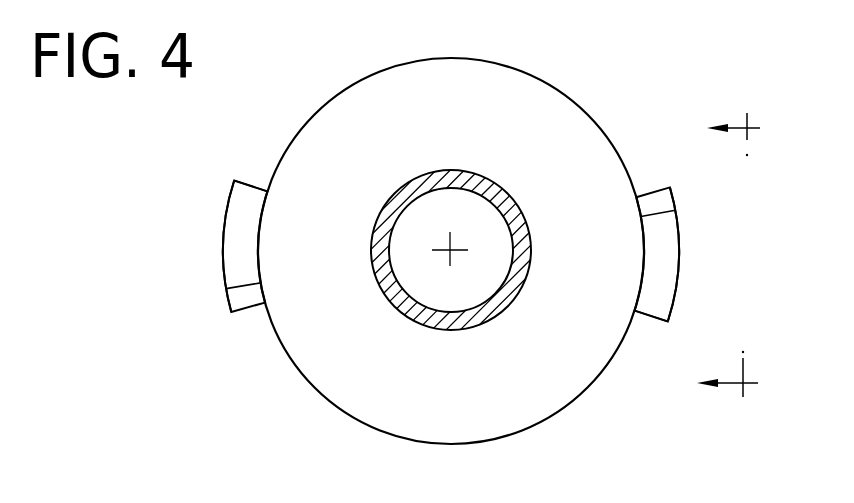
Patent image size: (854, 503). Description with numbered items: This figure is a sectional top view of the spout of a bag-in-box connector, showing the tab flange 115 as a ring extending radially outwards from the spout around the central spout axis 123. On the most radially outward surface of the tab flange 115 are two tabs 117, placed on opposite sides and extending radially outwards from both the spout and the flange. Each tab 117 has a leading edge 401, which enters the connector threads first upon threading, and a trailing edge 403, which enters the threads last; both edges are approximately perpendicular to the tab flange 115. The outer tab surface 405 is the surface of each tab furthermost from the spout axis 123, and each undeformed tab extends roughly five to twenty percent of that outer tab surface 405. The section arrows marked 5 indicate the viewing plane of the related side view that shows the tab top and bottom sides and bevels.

The tab flange 115 is at (540, 410).
The tabs 117 is at (223, 257).
The spout axis 123 is at (455, 245).
The leading edge 401 is at (249, 309).
The trailing edge 403 is at (250, 181).
The outer tab surface 405 is at (222, 237).
The section line 5- 5 is at (730, 256).